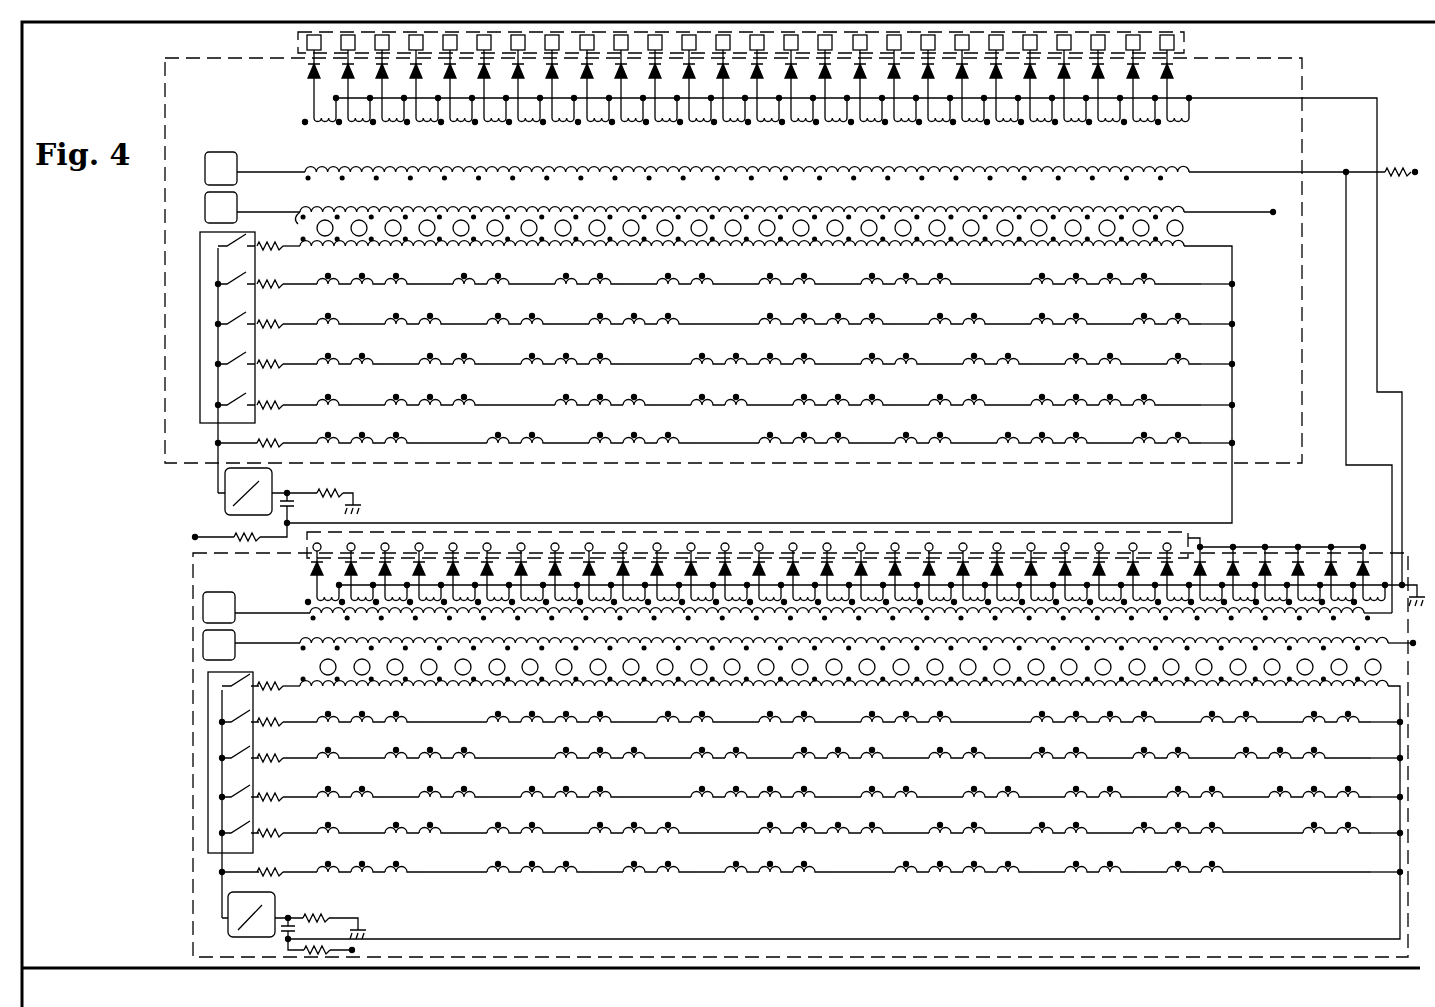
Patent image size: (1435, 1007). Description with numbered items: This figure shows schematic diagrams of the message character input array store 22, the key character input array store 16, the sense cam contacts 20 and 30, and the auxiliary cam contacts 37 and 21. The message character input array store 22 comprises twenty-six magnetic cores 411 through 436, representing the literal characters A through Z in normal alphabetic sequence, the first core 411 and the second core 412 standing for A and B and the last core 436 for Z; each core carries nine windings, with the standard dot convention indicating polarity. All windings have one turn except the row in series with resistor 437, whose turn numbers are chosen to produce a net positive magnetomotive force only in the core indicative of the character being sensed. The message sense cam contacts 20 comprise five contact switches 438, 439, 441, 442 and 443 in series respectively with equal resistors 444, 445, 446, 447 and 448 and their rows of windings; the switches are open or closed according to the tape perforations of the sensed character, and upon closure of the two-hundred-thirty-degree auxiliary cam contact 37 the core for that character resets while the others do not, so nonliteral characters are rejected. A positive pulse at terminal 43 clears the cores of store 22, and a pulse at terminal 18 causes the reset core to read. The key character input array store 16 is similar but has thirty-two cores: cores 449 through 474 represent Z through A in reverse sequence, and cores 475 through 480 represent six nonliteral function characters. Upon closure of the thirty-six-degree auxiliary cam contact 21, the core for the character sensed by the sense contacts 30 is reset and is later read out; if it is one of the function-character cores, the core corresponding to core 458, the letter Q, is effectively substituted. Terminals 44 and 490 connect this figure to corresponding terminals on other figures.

The magnetic core 480 is at (1184, 42).
The message character input array store 22 is at (1302, 160).
The terminal 18 is at (811, 382).
The terminal 43 is at (740, 209).
The magnetic core 411 is at (300, 218).
The magnetic core 412 is at (363, 222).
The magnetic core 436 is at (1184, 224).
The message sense cam contacts 20 is at (200, 238).
The contact switch 438 is at (234, 246).
The contact switch 439 is at (234, 285).
The contact switch 441 is at (240, 325).
The contact switch 442 is at (240, 365).
The contact switch 443 is at (236, 407).
The resistor 444 is at (269, 240).
The resistor 445 is at (273, 283).
The resistor 446 is at (272, 323).
The resistor 447 is at (275, 364).
The resistor 448 is at (273, 405).
The resistor 437 is at (277, 443).
The 230 degree auxiliary cam contact 37 is at (272, 491).
The key character input array store 16 is at (1362, 547).
The terminal 490 is at (1199, 532).
The 36 degree auxiliary cam contact 21 is at (275, 915).
The terminal 44 is at (810, 645).
The magnetic core 449 is at (323, 656).
The magnetic core 458 is at (638, 658).
The magnetic core 474 is at (1180, 634).
The magnetic core 475 is at (1215, 637).
The sense contacts 30 is at (253, 674).